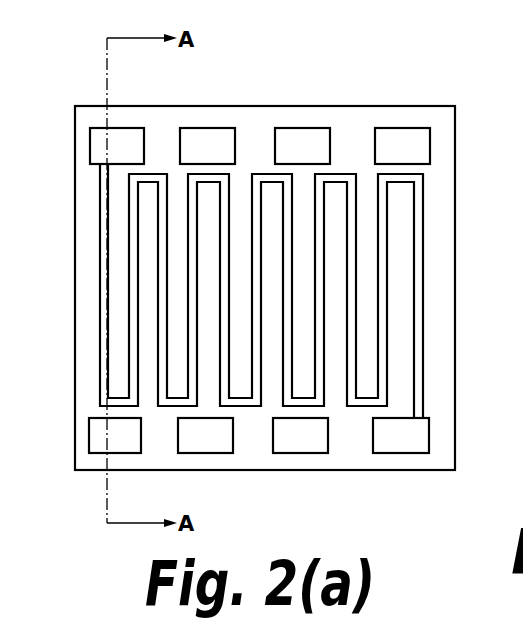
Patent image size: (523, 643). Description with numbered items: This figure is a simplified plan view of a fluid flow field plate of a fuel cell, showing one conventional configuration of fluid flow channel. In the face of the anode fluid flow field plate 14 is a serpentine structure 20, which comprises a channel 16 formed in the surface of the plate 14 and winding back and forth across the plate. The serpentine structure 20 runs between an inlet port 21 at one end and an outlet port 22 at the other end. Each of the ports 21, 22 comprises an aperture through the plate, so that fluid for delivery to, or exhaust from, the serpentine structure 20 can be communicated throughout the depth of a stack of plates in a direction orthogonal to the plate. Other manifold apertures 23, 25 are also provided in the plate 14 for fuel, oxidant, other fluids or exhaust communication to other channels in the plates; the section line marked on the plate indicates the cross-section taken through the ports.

The anode fluid flow field plate 14 is at (443, 142).
The channel 16 is at (130, 258).
The serpentine structure 20 is at (395, 284).
The inlet port 21 is at (130, 134).
The outlet port 22 is at (413, 436).
The manifold aperture 23 is at (293, 128).
The manifold aperture 25 is at (205, 128).